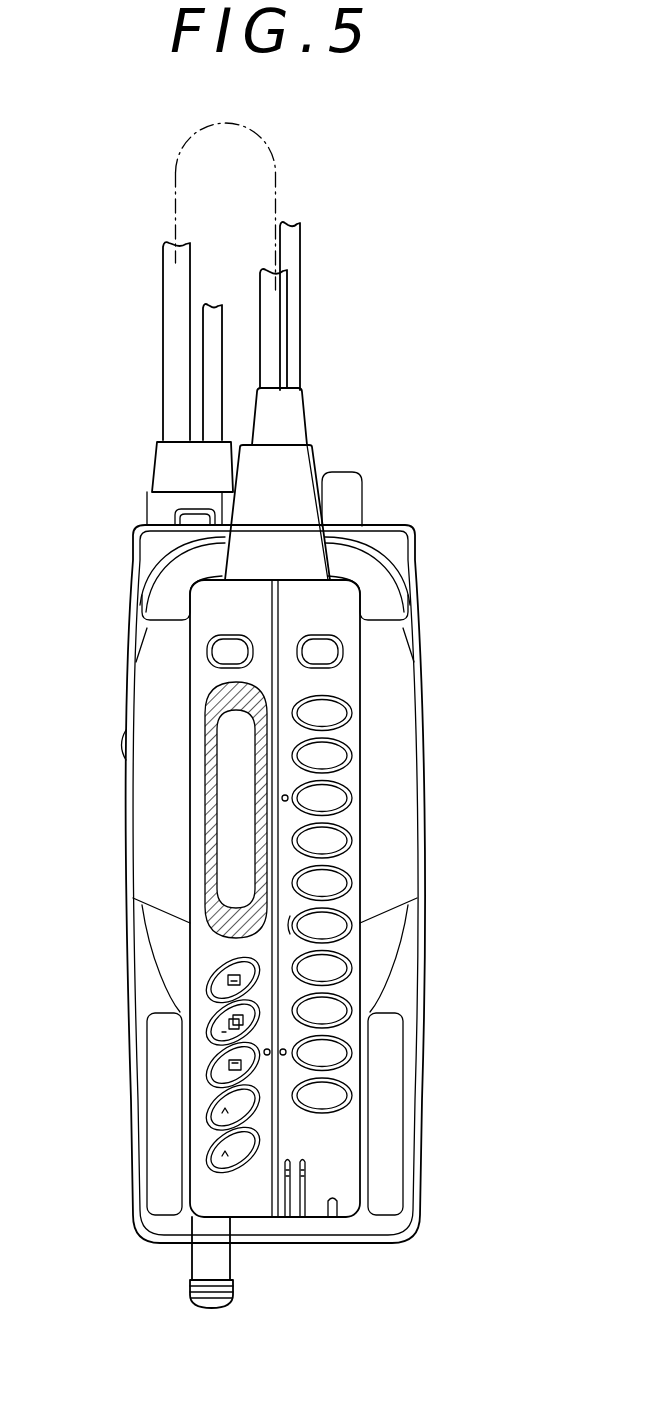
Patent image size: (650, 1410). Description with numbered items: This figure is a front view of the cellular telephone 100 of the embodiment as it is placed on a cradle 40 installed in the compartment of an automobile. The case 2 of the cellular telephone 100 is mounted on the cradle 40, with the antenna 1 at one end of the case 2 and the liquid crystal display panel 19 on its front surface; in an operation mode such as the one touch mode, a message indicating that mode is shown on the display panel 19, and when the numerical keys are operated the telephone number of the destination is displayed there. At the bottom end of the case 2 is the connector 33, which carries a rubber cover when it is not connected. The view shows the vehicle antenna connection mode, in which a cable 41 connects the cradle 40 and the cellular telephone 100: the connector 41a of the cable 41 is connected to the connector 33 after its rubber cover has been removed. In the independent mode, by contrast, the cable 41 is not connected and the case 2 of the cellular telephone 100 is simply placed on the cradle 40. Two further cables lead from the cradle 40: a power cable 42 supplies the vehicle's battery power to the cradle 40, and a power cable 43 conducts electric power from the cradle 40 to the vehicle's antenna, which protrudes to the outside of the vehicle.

The cellular telephone 100 is at (347, 822).
The cradle 40 is at (403, 748).
The case 2 is at (340, 683).
The connector 33 is at (267, 590).
The display panel 19 is at (220, 822).
The antenna 1 is at (200, 1262).
The power cable 43 is at (208, 362).
The cable 41 is at (280, 327).
The power cable 42 is at (293, 252).
The connector 41a is at (300, 472).